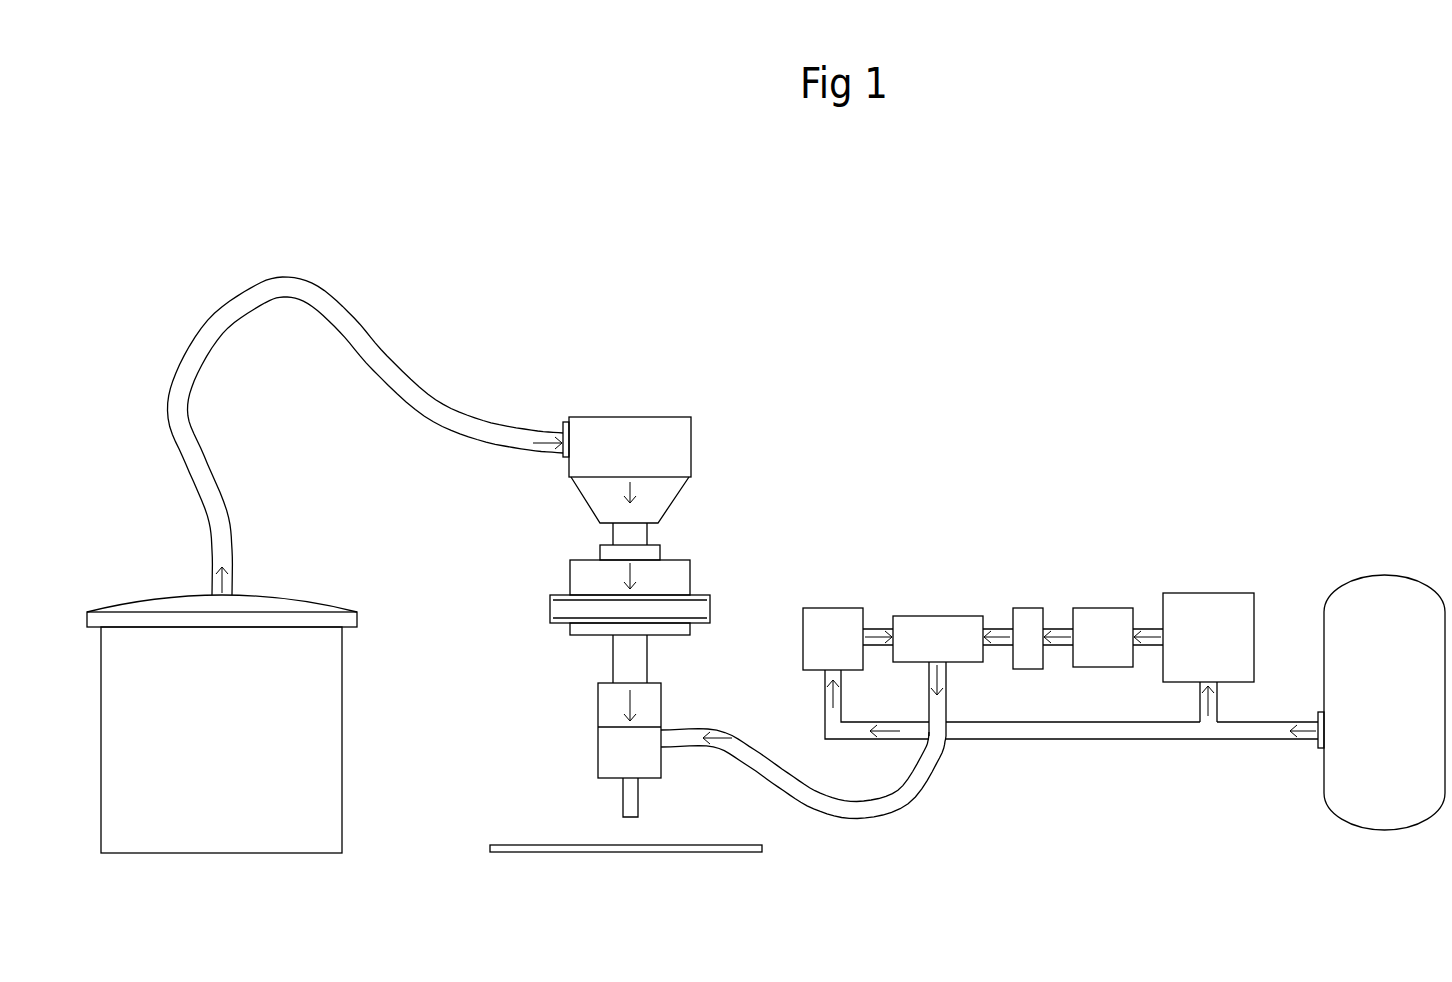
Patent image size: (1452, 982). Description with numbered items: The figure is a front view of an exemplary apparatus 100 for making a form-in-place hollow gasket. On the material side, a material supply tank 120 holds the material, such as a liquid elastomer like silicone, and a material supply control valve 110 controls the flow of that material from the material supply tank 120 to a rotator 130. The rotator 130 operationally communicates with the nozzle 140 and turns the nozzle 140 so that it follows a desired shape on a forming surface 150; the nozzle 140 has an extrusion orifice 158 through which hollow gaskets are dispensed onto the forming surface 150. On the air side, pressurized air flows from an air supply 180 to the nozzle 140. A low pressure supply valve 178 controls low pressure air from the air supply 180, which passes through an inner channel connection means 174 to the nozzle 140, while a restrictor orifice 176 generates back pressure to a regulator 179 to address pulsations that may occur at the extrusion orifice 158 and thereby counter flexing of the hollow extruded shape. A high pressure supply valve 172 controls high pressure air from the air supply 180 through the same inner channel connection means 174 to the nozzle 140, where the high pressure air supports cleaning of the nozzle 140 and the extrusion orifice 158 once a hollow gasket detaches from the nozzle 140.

The apparatus for making a form-in-place hollow gasket 100 is at (801, 462).
The material supply control valve 110 is at (592, 417).
The material supply tank 120 is at (270, 595).
The rotator 130 is at (570, 572).
The nozzle 140 is at (598, 683).
The forming surface 150 is at (532, 845).
The extrusion orifice 158 is at (623, 815).
The high pressure supply valve 172 is at (830, 608).
The inner channel connection means 174 is at (930, 616).
The restrictor orifice 176 is at (1028, 608).
The low pressure supply valve 178 is at (1103, 608).
The regulator 179 is at (1208, 593).
The air supply 180 is at (1382, 575).